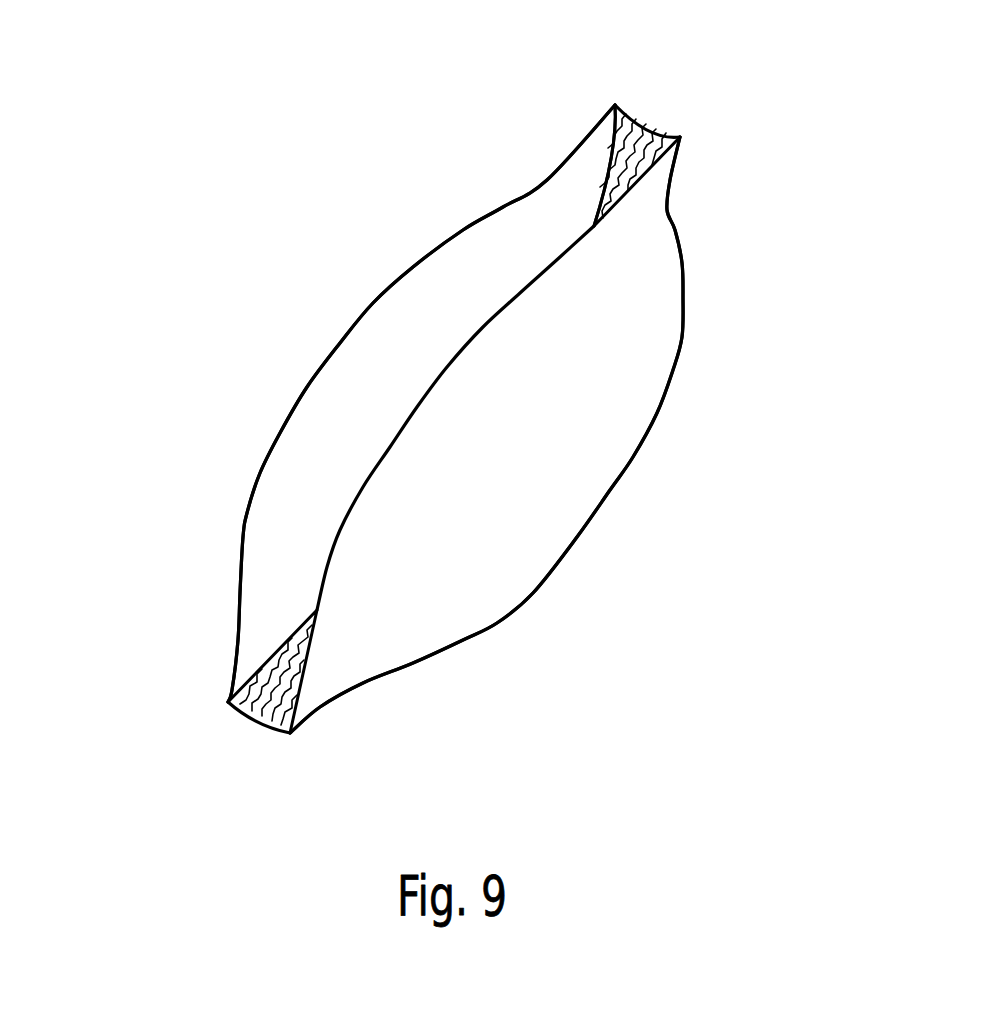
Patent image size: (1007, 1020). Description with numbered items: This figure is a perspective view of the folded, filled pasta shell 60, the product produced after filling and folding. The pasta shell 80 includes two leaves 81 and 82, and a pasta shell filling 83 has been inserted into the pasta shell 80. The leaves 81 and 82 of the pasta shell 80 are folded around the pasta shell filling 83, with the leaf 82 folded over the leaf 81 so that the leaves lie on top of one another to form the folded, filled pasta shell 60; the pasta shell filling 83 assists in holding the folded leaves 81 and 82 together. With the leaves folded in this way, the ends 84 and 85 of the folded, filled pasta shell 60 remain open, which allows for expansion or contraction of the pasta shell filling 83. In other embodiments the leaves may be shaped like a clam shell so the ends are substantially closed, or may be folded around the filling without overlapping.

The folded, filled pasta shell 60 is at (819, 328).
The pasta shell 80 is at (533, 593).
The leaf 81 is at (410, 388).
The leaf 82 is at (470, 410).
The pasta shell filling 83 is at (647, 130).
The end 84 is at (263, 717).
The end 85 is at (628, 116).